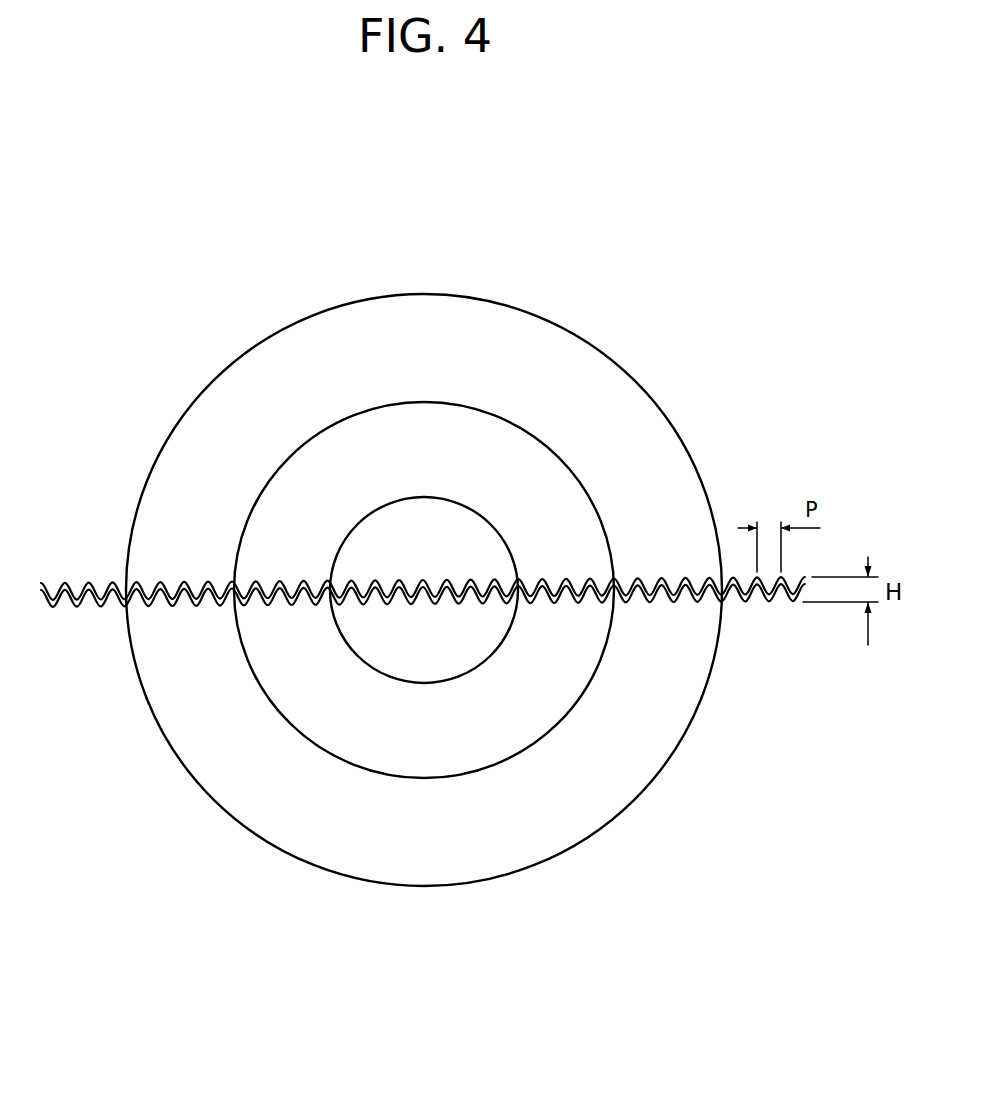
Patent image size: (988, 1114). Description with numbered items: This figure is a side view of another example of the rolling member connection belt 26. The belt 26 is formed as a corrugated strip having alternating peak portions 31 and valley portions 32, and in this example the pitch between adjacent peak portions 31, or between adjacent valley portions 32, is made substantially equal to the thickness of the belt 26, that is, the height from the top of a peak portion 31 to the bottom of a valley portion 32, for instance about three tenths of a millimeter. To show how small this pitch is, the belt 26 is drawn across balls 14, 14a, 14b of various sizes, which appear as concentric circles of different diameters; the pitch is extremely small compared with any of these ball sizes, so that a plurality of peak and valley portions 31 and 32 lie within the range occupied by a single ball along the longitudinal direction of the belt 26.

The ball 14 is at (480, 533).
The ball 14a is at (577, 503).
The ball 14b is at (643, 408).
The rolling member connection belt 26 is at (746, 606).
The peak portion 31 is at (639, 579).
The valley portion 32 is at (650, 605).